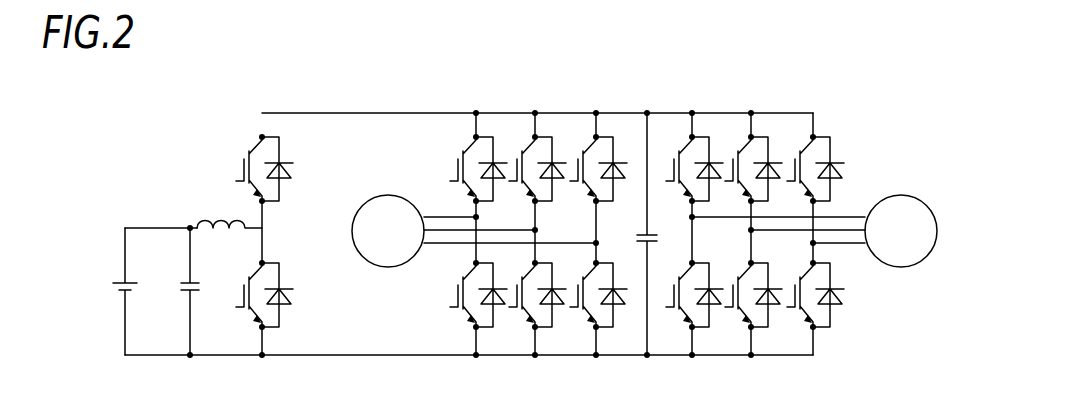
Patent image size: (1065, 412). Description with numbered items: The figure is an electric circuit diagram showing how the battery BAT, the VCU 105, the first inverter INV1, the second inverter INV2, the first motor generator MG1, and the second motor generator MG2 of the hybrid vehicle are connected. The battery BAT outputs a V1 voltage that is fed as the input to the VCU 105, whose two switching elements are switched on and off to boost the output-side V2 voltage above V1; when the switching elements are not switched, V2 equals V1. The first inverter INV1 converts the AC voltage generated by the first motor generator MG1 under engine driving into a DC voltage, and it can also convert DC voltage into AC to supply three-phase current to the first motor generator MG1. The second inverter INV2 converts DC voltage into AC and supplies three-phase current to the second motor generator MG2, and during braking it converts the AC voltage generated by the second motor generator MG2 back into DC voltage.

The VCU (Voltage Control Unit) 105 is at (177, 101).
The first inverter INV1 is at (440, 101).
The second inverter INV2 is at (663, 111).
The first motor generator MG1 is at (474, 231).
The second motor generator MG2 is at (814, 231).
The battery BAT is at (111, 291).